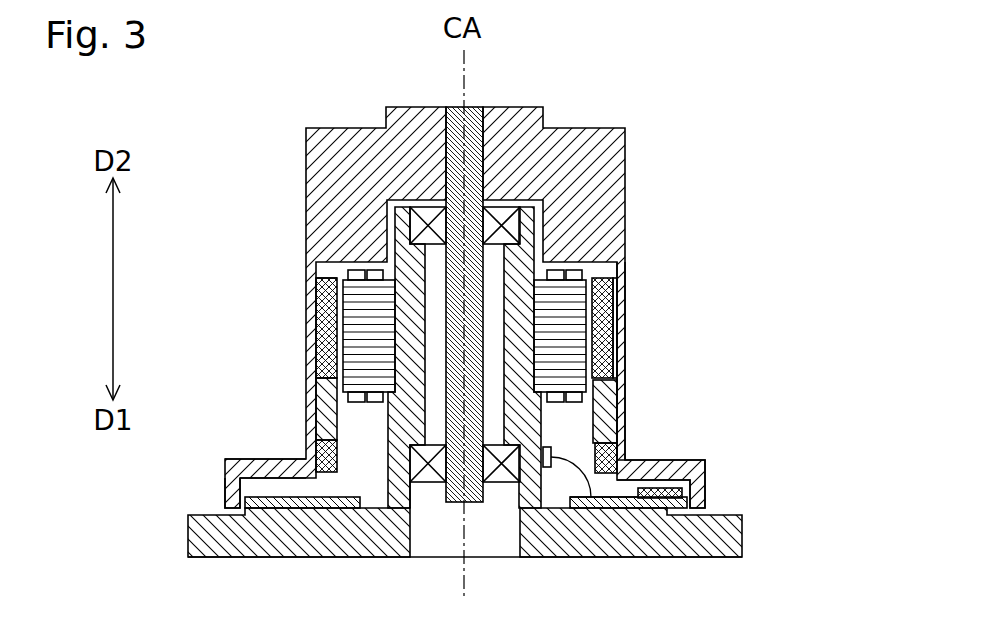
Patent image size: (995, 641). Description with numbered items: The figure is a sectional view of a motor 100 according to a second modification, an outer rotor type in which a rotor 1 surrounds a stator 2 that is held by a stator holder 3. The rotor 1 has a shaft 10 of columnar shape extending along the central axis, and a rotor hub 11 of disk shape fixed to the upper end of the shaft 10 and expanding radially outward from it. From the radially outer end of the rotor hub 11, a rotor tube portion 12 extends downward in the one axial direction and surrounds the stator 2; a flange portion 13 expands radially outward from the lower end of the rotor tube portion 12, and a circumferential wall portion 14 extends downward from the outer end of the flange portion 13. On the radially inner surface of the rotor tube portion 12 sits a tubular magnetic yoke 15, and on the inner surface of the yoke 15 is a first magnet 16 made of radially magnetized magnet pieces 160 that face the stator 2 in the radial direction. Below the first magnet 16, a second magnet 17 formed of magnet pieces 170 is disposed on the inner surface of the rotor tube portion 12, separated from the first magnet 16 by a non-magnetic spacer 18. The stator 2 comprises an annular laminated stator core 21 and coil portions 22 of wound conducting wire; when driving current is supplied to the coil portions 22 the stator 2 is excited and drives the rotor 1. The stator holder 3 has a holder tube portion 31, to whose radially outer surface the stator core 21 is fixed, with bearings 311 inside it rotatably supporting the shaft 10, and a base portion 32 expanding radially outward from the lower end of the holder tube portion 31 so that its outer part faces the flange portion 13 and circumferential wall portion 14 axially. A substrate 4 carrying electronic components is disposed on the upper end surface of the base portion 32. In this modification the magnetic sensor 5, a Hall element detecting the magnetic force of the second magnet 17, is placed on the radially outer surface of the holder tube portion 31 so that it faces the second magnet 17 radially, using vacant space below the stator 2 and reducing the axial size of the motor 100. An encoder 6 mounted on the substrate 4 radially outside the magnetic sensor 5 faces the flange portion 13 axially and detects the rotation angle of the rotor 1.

The motor 100 is at (462, 264).
The rotor 1 is at (462, 285).
The shaft 10 is at (453, 107).
The rotor hub 11 is at (557, 140).
The rotor tube portion 12 is at (622, 378).
The flange portion 13 is at (272, 460).
The circumferential wall portion 14 is at (233, 490).
The yoke 15 is at (626, 297).
The first magnet 16 is at (620, 348).
The magnet pieces 160 is at (624, 309).
The second magnet 17 is at (628, 450).
The magnet pieces 170 is at (621, 457).
The spacer 18 is at (622, 413).
The stator 2 is at (470, 308).
The stator core 21 is at (330, 347).
The coil portions 22 is at (328, 274).
The stator holder 3 is at (465, 418).
The holder tube portion 31 is at (520, 490).
The bearings 311 is at (431, 480).
The base portion 32 is at (311, 559).
The substrate 4 is at (672, 500).
The magnetic sensor 5 is at (605, 498).
The encoder 6 is at (684, 492).